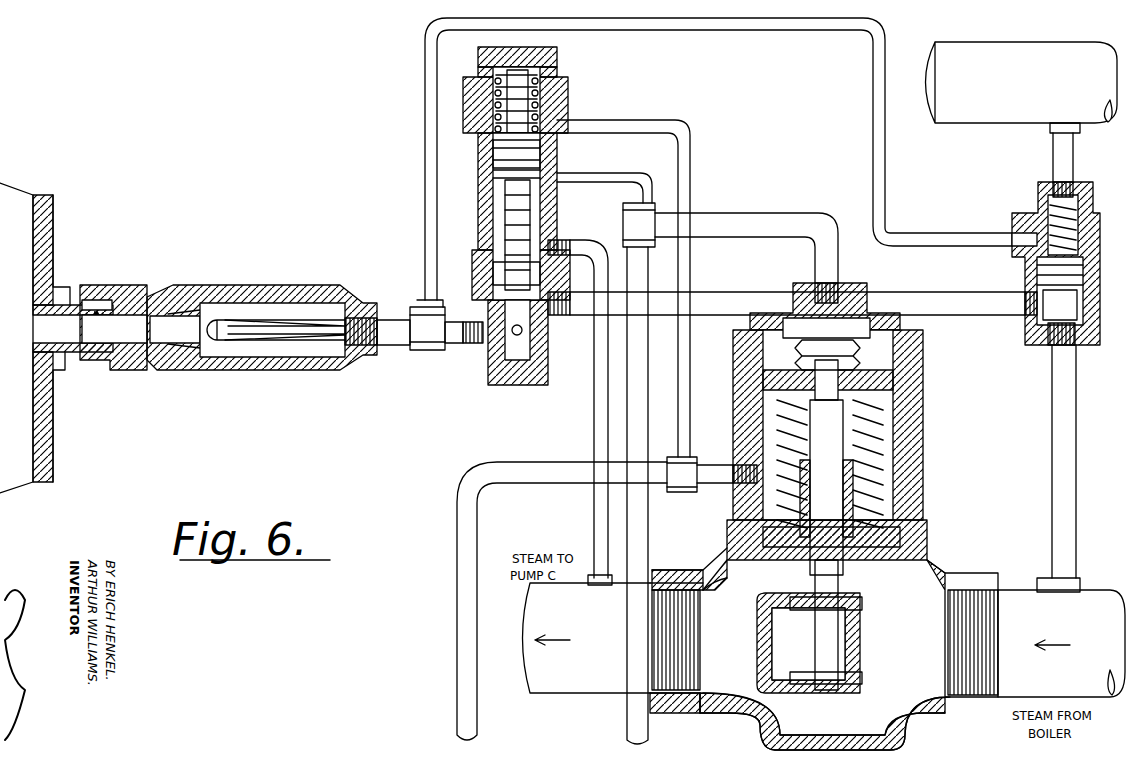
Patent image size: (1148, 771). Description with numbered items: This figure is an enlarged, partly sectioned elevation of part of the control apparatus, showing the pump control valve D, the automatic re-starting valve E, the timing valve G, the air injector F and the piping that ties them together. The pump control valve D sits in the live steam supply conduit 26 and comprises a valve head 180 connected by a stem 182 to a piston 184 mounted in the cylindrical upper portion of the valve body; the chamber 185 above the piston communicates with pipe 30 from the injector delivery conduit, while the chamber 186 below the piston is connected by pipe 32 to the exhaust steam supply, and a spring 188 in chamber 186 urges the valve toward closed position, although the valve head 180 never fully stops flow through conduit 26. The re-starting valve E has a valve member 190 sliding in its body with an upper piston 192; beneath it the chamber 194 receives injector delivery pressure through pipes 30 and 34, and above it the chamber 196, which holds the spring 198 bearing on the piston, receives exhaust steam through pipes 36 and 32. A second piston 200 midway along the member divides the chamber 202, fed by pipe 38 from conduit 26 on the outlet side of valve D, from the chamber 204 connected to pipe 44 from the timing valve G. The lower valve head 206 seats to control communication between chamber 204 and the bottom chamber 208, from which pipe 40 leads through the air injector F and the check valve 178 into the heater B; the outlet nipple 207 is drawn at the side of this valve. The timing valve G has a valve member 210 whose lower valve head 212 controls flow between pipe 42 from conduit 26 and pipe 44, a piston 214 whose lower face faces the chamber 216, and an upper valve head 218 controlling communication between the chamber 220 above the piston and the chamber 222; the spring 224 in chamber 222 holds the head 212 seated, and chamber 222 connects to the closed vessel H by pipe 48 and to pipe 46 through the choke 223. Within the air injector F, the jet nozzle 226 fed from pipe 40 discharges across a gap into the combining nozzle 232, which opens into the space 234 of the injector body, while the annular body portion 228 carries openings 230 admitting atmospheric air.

The heater B is at (64, 219).
The check valve 178 is at (96, 330).
The pipe 40 is at (148, 300).
The air injector F is at (278, 318).
The combining nozzle 232 is at (180, 325).
The space 234 is at (270, 305).
The jet nozzle 226 is at (305, 335).
The openings 230 is at (222, 330).
The annular body portion 228 is at (190, 365).
The pipe 46 is at (775, 30).
The automatic re-starting valve E is at (524, 211).
The spring 198 is at (488, 66).
The chamber 196 is at (540, 80).
The piston 192 is at (540, 155).
The chamber 194 is at (482, 178).
The valve member 190 is at (510, 205).
The chamber 202 is at (492, 248).
The second piston 200 is at (500, 277).
The valve head 206 is at (490, 305).
The chamber 208 is at (560, 350).
The outlet nipple 207 is at (558, 295).
The chamber 204 is at (559, 303).
The pipe 36 is at (692, 155).
The pipe 34 is at (580, 178).
The pipe 30 is at (640, 385).
The pipe 38 is at (594, 410).
The pipe 32 is at (476, 535).
The pipe 44 is at (960, 306).
The closed vessel H is at (1000, 33).
The pipe 48 is at (1053, 150).
The timing valve G is at (1052, 264).
The chamber 222 is at (1085, 197).
The spring 224 is at (1040, 200).
The choke 223 is at (1012, 225).
The chamber 220 is at (1088, 256).
The valve head 218 is at (1025, 258).
The piston 214 is at (1045, 268).
The valve member 210 is at (1072, 302).
The chamber 216 is at (1090, 310).
The valve head 212 is at (1070, 327).
The pipe 42 is at (1075, 472).
The pump control valve D is at (839, 425).
The chamber 185 is at (790, 312).
The piston 184 is at (880, 378).
The spring 188 is at (785, 428).
The chamber 186 is at (885, 495).
The stem 182 is at (835, 435).
The live steam supply conduit 26 is at (570, 688).
The valve head 180 is at (825, 630).